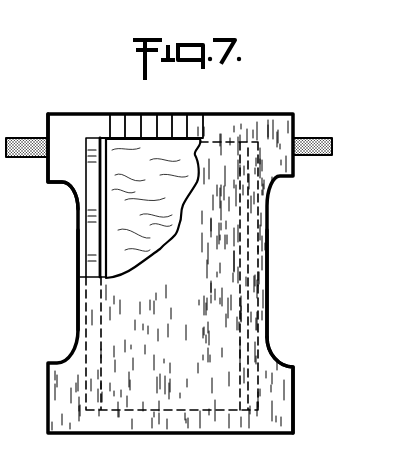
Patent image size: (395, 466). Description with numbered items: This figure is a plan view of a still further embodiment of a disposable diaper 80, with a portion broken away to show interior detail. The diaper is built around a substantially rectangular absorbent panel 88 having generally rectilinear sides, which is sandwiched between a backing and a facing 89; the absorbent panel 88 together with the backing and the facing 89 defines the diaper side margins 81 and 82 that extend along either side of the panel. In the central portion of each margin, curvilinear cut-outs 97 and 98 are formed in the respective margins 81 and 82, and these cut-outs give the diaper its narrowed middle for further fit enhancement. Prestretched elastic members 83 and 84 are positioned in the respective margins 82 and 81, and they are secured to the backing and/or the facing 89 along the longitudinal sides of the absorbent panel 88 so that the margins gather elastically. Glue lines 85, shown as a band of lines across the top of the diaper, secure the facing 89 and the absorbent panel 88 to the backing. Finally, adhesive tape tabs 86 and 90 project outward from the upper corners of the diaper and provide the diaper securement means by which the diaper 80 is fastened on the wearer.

The disposable diaper 80 is at (227, 114).
The diaper side margin 81 is at (292, 365).
The diaper side margin 82 is at (52, 168).
The prestretched elastic member 83 is at (88, 137).
The prestretched elastic member 84 is at (250, 211).
The glue lines 85 is at (160, 116).
The adhesive tape tab 86 is at (24, 138).
The absorbent panel 88 is at (163, 245).
The facing 89 is at (182, 333).
The adhesive tape tab 90 is at (317, 138).
The curvilinear cut-out 97 is at (267, 293).
The curvilinear cut-out 98 is at (78, 288).